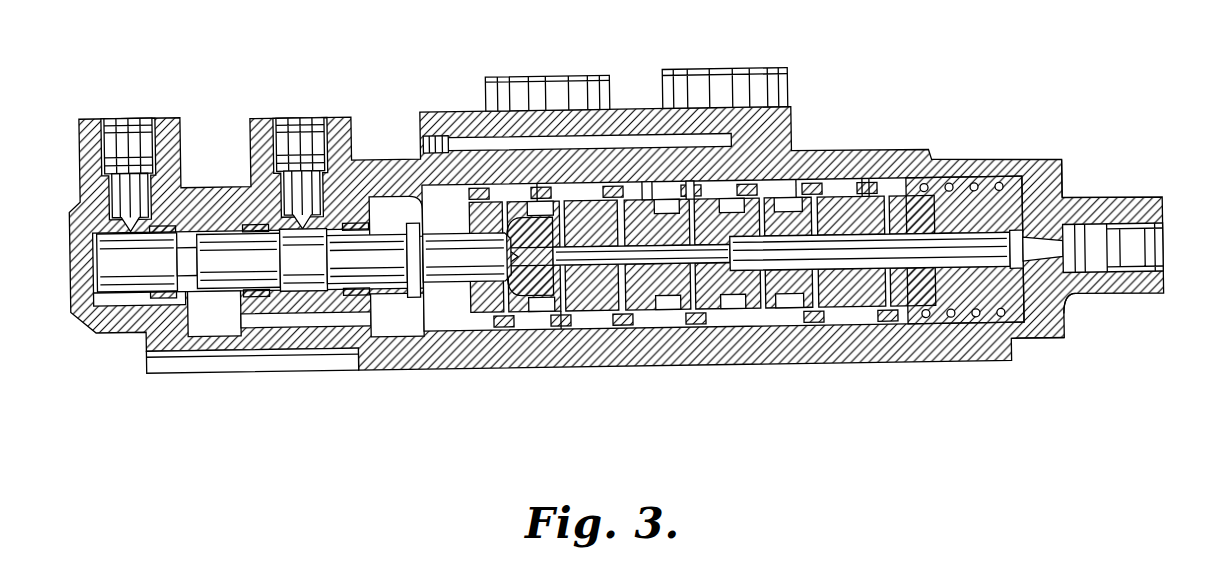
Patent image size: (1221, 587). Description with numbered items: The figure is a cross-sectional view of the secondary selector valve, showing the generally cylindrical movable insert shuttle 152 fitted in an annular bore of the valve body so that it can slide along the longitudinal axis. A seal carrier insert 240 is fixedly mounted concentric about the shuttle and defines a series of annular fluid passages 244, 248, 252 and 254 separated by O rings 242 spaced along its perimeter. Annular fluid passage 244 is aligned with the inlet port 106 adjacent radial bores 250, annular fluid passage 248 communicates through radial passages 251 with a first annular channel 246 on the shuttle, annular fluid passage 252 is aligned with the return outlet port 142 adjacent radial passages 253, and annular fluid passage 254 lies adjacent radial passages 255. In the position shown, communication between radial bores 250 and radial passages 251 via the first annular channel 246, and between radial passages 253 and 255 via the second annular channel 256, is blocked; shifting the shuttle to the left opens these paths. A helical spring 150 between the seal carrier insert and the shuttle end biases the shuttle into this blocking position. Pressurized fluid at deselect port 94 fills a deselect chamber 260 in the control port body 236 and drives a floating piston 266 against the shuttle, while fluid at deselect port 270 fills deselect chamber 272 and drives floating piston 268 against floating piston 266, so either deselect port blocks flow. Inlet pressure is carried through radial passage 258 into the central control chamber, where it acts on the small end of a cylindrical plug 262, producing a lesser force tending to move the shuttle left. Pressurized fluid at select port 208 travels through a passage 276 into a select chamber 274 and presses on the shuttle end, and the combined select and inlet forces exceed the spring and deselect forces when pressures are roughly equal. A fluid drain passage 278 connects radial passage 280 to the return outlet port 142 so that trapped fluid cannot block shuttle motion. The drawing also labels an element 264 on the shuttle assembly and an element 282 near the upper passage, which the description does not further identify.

The deselect port 94 is at (312, 113).
The inlet port 106 is at (545, 73).
The return outlet port 142 is at (750, 70).
The spring 150 is at (1010, 195).
The movable insert shuttle 152 is at (560, 328).
The select port 208 is at (1163, 236).
The control port body 236 is at (272, 352).
The seal carrier insert 240 is at (950, 175).
The O rings 242 is at (473, 181).
The annular fluid passage 244 is at (540, 328).
The first annular channel 246 is at (712, 330).
The annular fluid passage 248 is at (648, 183).
The radial bores 250 is at (538, 193).
The radial passages 251 is at (646, 330).
The annular fluid passage 252 is at (797, 182).
The radial passages 253 is at (808, 182).
The annular fluid passage 254 is at (866, 182).
The radial passages 255 is at (868, 330).
The second annular channel 256 is at (918, 330).
The radial passage 258 is at (485, 300).
The deselect chamber 260 is at (602, 328).
The plug 262 is at (935, 335).
The spool land 264 is at (300, 284).
The floating piston 266 is at (352, 288).
The floating piston 268 is at (132, 287).
The deselect port 270 is at (150, 90).
The deselect chamber 272 is at (97, 285).
The select chamber 274 is at (1043, 320).
The passage 276 is at (1042, 238).
The fluid drain passage 278 is at (691, 183).
The radial passage 280 is at (425, 148).
The passage 282 is at (450, 156).